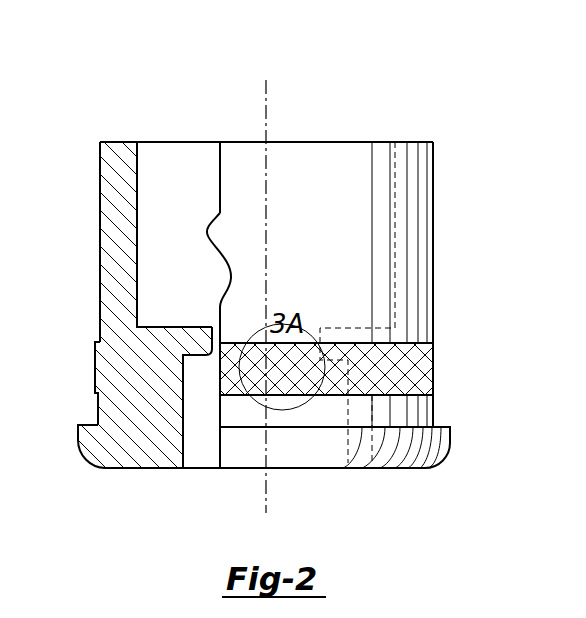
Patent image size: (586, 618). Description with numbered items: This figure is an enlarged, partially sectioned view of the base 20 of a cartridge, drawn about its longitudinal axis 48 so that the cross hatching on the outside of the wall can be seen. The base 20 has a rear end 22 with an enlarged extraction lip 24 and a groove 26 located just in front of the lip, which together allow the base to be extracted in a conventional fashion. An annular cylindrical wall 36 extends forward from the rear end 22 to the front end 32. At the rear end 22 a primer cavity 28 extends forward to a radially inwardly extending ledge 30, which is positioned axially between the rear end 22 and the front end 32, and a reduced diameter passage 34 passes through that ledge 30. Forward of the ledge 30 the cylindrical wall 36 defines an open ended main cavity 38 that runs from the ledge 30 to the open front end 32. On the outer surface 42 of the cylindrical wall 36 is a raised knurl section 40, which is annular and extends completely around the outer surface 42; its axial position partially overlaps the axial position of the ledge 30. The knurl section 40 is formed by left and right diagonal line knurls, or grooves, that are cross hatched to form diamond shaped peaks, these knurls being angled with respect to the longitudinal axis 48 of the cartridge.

The base 20 is at (372, 106).
The rear end 22 is at (105, 468).
The extraction lip 24 is at (438, 457).
The groove 26 is at (98, 410).
The primer cavity 28 is at (198, 425).
The ledge 30 is at (193, 343).
The front end 32 is at (177, 142).
The passage 34 is at (220, 337).
The annular cylindrical wall 36 is at (137, 218).
The main cavity 38 is at (189, 238).
The knurl section 40 is at (95, 352).
The outer surface 42 is at (100, 255).
The longitudinal axis 48 is at (266, 170).